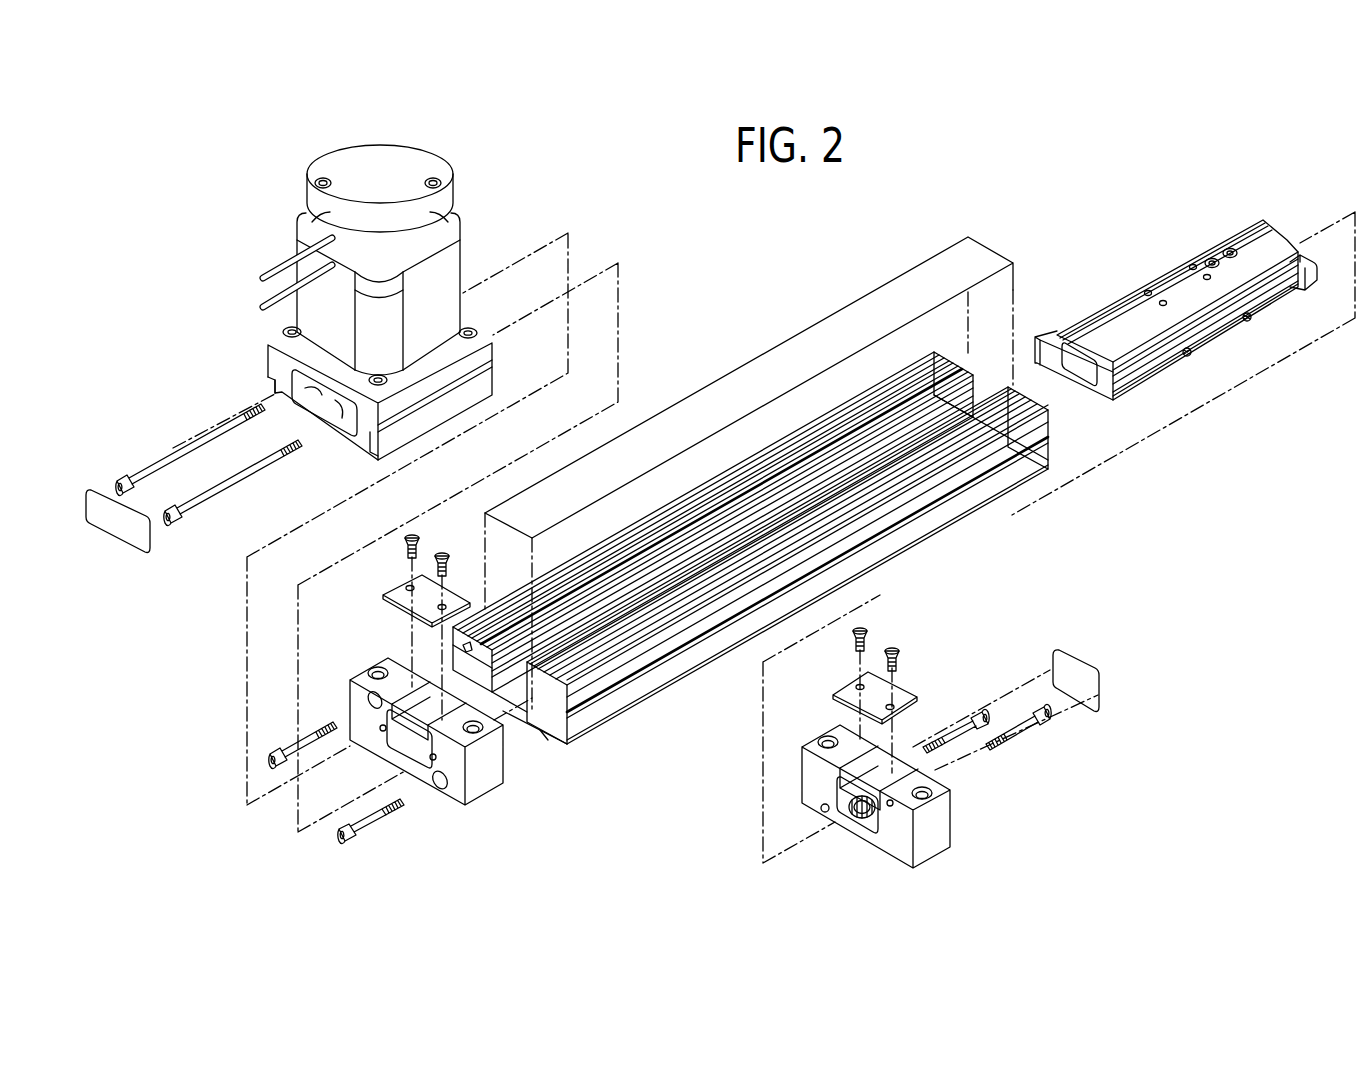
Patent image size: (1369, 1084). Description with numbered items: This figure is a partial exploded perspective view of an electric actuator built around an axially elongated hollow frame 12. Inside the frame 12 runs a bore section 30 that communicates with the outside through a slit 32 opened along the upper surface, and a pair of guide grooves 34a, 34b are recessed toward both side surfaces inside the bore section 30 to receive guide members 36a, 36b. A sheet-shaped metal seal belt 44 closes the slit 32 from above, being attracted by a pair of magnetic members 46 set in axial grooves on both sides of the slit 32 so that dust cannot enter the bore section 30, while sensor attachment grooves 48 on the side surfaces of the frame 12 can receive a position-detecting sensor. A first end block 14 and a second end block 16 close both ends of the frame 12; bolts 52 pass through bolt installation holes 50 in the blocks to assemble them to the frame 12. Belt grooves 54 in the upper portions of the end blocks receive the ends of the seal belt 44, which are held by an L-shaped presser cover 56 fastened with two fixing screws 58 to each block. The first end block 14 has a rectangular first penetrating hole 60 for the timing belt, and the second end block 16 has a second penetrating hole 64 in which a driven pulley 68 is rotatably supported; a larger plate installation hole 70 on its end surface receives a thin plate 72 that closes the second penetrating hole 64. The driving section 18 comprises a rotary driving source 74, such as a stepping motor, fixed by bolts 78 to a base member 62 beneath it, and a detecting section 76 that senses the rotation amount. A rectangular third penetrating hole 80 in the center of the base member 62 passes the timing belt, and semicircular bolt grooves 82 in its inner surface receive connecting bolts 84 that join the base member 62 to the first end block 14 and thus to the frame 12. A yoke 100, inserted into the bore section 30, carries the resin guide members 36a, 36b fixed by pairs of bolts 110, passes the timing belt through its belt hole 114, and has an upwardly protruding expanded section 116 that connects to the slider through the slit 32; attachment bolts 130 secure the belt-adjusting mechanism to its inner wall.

The frame 12 is at (688, 527).
The first end block 14 is at (618, 755).
The second end block 16 is at (835, 818).
The driving section 18 is at (364, 238).
The bore section 30 is at (523, 697).
The slit 32 is at (683, 540).
The guide groove 34a is at (547, 733).
The guide groove 34b is at (477, 657).
The guide member 36a is at (1173, 360).
The guide member 36b is at (1095, 307).
The seal belt 44 is at (732, 387).
The magnetic members 46 is at (612, 612).
The sensor attachment grooves 48 is at (660, 660).
The bolt installation holes 50 is at (372, 700).
The bolts 52 is at (285, 752).
The belt grooves 54 is at (432, 682).
The presser cover 56 is at (395, 600).
The fixing screws 58 is at (442, 553).
The first penetrating hole 60 is at (410, 747).
The base member 62 is at (381, 410).
The second penetrating hole 64 is at (838, 797).
The driven pulley 68 is at (860, 820).
The plate installation hole 70 is at (354, 437).
The plate 72 is at (100, 505).
The rotary driving source 74 is at (452, 275).
The detecting section 76 is at (383, 152).
The bolts 78 is at (285, 325).
The third penetrating hole 80 is at (320, 405).
The bolt grooves 82 is at (275, 388).
The connecting bolts 84 is at (185, 443).
The yoke 100 is at (1184, 329).
The bolts 110 is at (1195, 368).
The belt hole 114 is at (1085, 375).
The expanded section 116 is at (1175, 283).
The attachment bolts 130 is at (1223, 247).